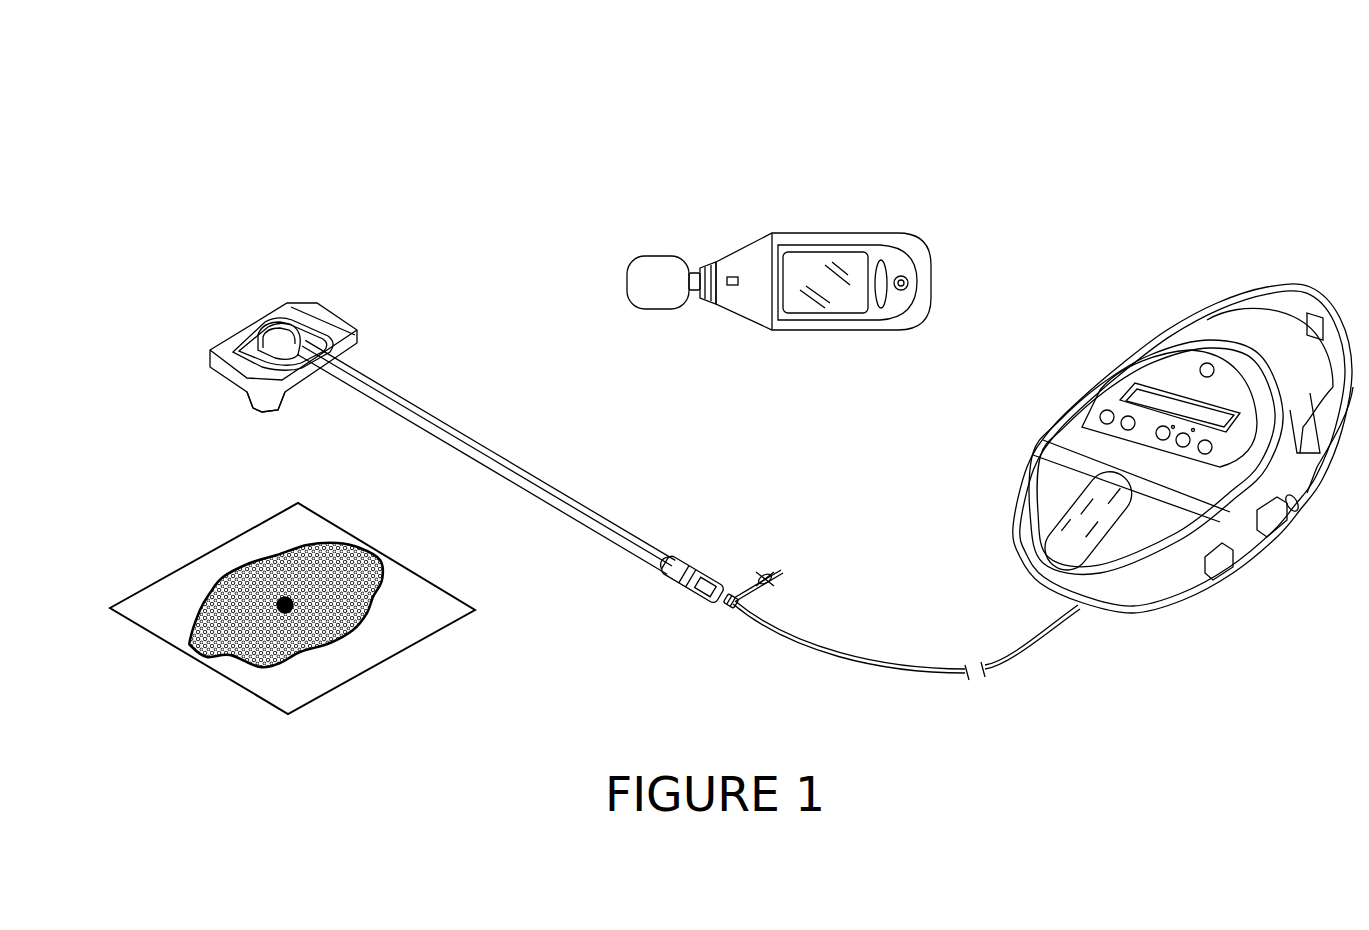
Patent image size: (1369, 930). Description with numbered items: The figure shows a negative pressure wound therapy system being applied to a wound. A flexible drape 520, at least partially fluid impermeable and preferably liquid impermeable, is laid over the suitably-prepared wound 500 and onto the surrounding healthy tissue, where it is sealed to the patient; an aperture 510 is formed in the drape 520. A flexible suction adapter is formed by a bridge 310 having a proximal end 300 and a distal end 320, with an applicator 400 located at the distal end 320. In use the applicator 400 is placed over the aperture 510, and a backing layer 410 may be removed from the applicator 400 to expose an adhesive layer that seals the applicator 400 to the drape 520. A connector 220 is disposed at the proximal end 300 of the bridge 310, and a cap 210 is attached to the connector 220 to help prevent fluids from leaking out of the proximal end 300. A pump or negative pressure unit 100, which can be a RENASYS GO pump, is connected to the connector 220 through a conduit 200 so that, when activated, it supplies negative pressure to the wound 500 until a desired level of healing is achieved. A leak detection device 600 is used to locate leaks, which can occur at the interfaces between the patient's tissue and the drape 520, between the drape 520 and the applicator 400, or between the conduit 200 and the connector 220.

The negative pressure unit 100 is at (1162, 326).
The conduit 200 is at (1033, 640).
The cap 210 is at (775, 565).
The connector 220 is at (732, 604).
The proximal end 300 is at (678, 582).
The bridge 310 is at (536, 476).
The distal end 320 is at (366, 372).
The applicator 400 is at (303, 303).
The backing layer 410 is at (243, 397).
The wound 500 is at (208, 655).
The aperture 510 is at (292, 611).
The drape 520 is at (420, 613).
The leak detection device 600 is at (801, 224).